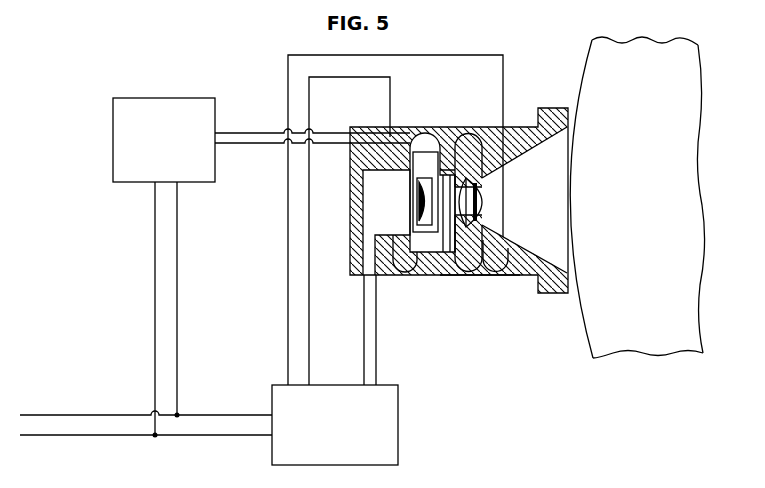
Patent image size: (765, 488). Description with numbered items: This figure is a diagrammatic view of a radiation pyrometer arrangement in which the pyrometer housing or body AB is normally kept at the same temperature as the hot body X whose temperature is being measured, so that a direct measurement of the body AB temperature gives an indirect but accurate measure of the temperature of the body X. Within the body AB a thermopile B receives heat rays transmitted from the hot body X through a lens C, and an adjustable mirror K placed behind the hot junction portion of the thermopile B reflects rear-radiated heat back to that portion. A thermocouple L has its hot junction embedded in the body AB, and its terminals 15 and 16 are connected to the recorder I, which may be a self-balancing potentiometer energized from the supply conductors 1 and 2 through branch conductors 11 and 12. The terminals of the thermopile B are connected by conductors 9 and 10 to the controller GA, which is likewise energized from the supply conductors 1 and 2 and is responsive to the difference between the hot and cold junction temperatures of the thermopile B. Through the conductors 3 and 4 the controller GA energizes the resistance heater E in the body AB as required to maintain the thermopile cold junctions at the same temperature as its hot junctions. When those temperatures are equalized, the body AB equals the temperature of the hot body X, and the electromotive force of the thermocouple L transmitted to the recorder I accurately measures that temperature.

The recorder I is at (120, 133).
The thermocouple terminal conductor 15 is at (254, 133).
The thermocouple terminal conductor 16 is at (254, 143).
The branch conductor 11 is at (155, 270).
The branch conductor 12 is at (177, 269).
The supply conductor 1 is at (80, 414).
The supply conductor 2 is at (84, 437).
The heater terminal conductor 4 is at (288, 323).
The heater terminal conductor 3 is at (309, 323).
The thermopile conductor 9 is at (364, 350).
The thermopile conductor 10 is at (376, 350).
The controller GA is at (400, 397).
The pyrometer body AB is at (430, 127).
The thermocouple L is at (386, 138).
The adjustable mirror K is at (420, 183).
The thermopile B is at (445, 130).
The lens C is at (480, 187).
The resistance heater E is at (449, 276).
The hot body X is at (593, 83).